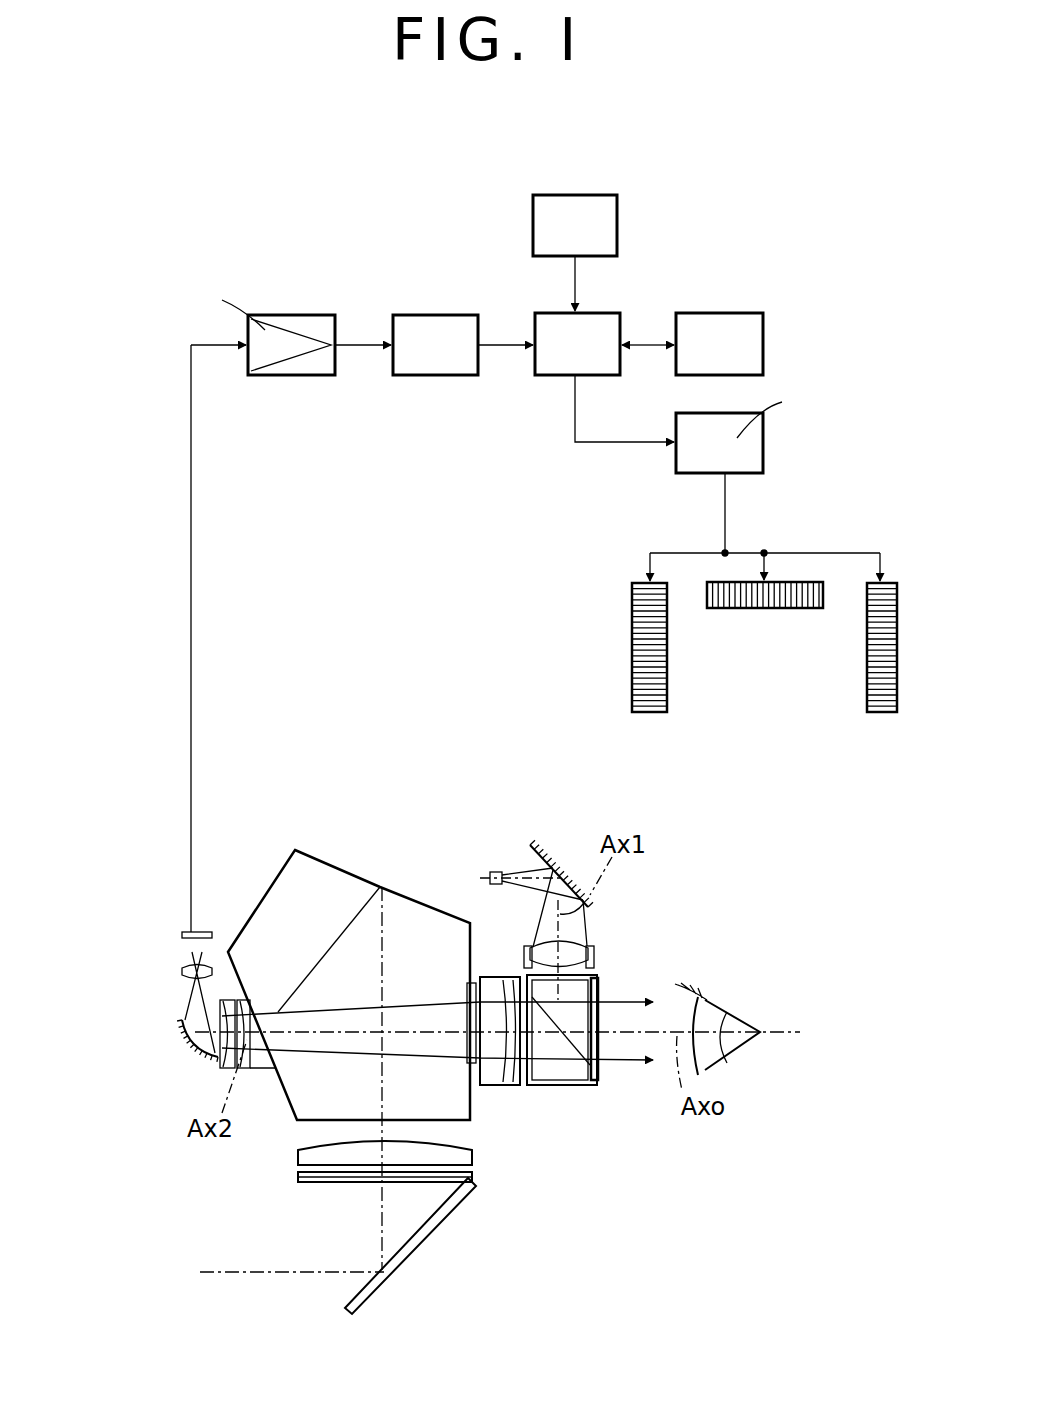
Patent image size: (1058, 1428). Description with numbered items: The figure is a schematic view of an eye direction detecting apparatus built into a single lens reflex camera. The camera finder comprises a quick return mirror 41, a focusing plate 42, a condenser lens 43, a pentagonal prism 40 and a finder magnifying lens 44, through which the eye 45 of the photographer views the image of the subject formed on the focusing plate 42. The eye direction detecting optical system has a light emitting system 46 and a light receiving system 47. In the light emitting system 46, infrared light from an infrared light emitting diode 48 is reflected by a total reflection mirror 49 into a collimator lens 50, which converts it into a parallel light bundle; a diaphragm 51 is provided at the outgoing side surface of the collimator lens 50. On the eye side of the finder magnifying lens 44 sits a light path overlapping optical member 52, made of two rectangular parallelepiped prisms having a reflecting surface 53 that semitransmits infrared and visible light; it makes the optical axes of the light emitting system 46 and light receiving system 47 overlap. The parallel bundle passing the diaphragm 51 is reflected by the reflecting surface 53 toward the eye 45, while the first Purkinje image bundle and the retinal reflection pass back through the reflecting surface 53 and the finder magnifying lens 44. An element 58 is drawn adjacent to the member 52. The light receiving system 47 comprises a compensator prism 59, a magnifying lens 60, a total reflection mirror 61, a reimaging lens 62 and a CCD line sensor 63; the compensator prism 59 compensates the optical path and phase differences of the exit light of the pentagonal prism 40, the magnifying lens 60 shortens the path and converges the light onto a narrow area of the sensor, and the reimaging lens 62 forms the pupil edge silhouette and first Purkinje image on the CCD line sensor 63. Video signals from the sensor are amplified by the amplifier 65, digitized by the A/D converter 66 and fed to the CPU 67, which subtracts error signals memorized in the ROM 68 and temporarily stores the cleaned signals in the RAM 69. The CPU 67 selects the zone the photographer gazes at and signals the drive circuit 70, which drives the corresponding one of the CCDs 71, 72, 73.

The pentagonal prism 40 is at (376, 884).
The quick return mirror 41 is at (433, 1230).
The focusing plate 42 is at (323, 1183).
The condenser lens 43 is at (298, 1160).
The finder magnifying lens 44 is at (503, 1088).
The eye of photographer 45 is at (727, 1010).
The light emitting system 46 is at (602, 926).
The light receiving system 47 is at (188, 1053).
The infrared light emitting diode 48 is at (496, 872).
The total reflection mirror 49 is at (556, 872).
The collimator lens 50 is at (595, 950).
The diaphragm 51 is at (598, 970).
The light path overlapping optical member 52 is at (590, 1090).
The reflecting surface 53 is at (570, 1047).
The lens 58 is at (600, 1074).
The compensator prism 59 is at (258, 1072).
The magnifying lens 60 is at (225, 1070).
The total reflection mirror 61 is at (185, 1025).
The reimaging lens 62 is at (183, 972).
The CCD line sensor 63 is at (182, 932).
The amplifier 65 is at (302, 315).
The A/D converter 66 is at (452, 315).
The CPU 67 is at (605, 313).
The ROM 68 is at (617, 228).
The RAM 69 is at (738, 313).
The drive circuit 70 is at (764, 443).
The CCD 71 is at (770, 612).
The CCD 72 is at (630, 648).
The CCD 73 is at (862, 655).